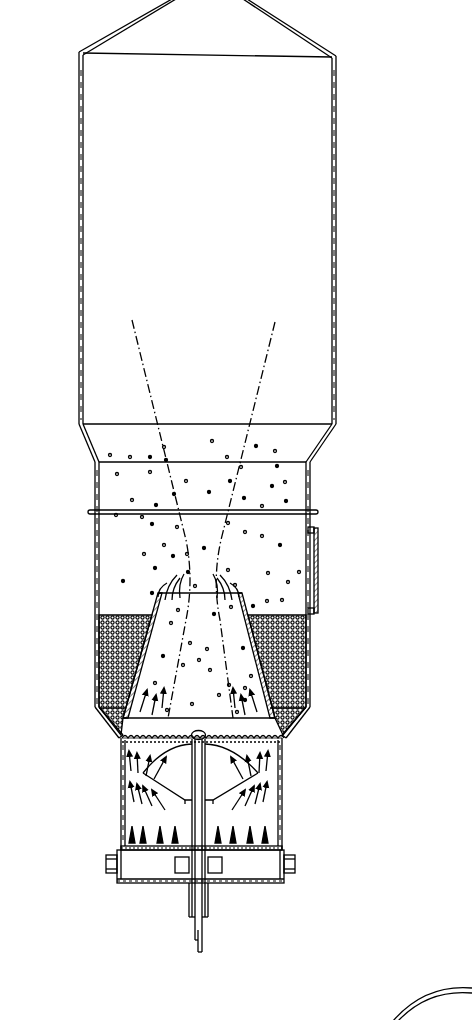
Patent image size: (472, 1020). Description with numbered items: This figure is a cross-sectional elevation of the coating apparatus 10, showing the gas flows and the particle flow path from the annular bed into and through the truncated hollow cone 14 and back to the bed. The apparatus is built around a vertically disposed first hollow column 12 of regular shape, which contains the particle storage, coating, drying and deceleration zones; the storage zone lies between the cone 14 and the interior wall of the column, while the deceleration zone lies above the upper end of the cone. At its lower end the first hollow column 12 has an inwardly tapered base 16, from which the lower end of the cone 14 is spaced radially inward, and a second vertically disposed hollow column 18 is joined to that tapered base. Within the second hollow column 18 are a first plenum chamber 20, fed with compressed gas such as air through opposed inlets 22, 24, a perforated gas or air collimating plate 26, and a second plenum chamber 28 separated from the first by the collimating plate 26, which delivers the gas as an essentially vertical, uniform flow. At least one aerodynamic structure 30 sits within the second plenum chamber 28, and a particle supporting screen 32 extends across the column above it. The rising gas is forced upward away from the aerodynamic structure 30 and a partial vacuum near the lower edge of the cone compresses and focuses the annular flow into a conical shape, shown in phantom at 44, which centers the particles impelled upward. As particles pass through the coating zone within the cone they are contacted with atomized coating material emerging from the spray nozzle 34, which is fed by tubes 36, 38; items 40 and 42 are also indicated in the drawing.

The coating apparatus 10 is at (360, 72).
The first hollow column 12 is at (345, 141).
The truncated hollow cone 14 is at (308, 646).
The inwardly tapered base 16 is at (305, 712).
The second hollow column 18 is at (284, 800).
The first plenum chamber 20 is at (243, 873).
The inlet 22 is at (104, 864).
The inlet 24 is at (299, 867).
The gas or air collimating plate 26 is at (278, 848).
The second plenum chamber 28 is at (263, 808).
The aerodynamic structure 30 is at (236, 783).
The supporting screen 32 is at (286, 739).
The spray nozzle 34 is at (203, 734).
The outer fuel tube 36 is at (190, 937).
The inner fuel tube 38 is at (207, 931).
The particulate bed 40 is at (98, 646).
The overflow weir 42 is at (320, 540).
The conical upward gas flow 44 is at (232, 678).